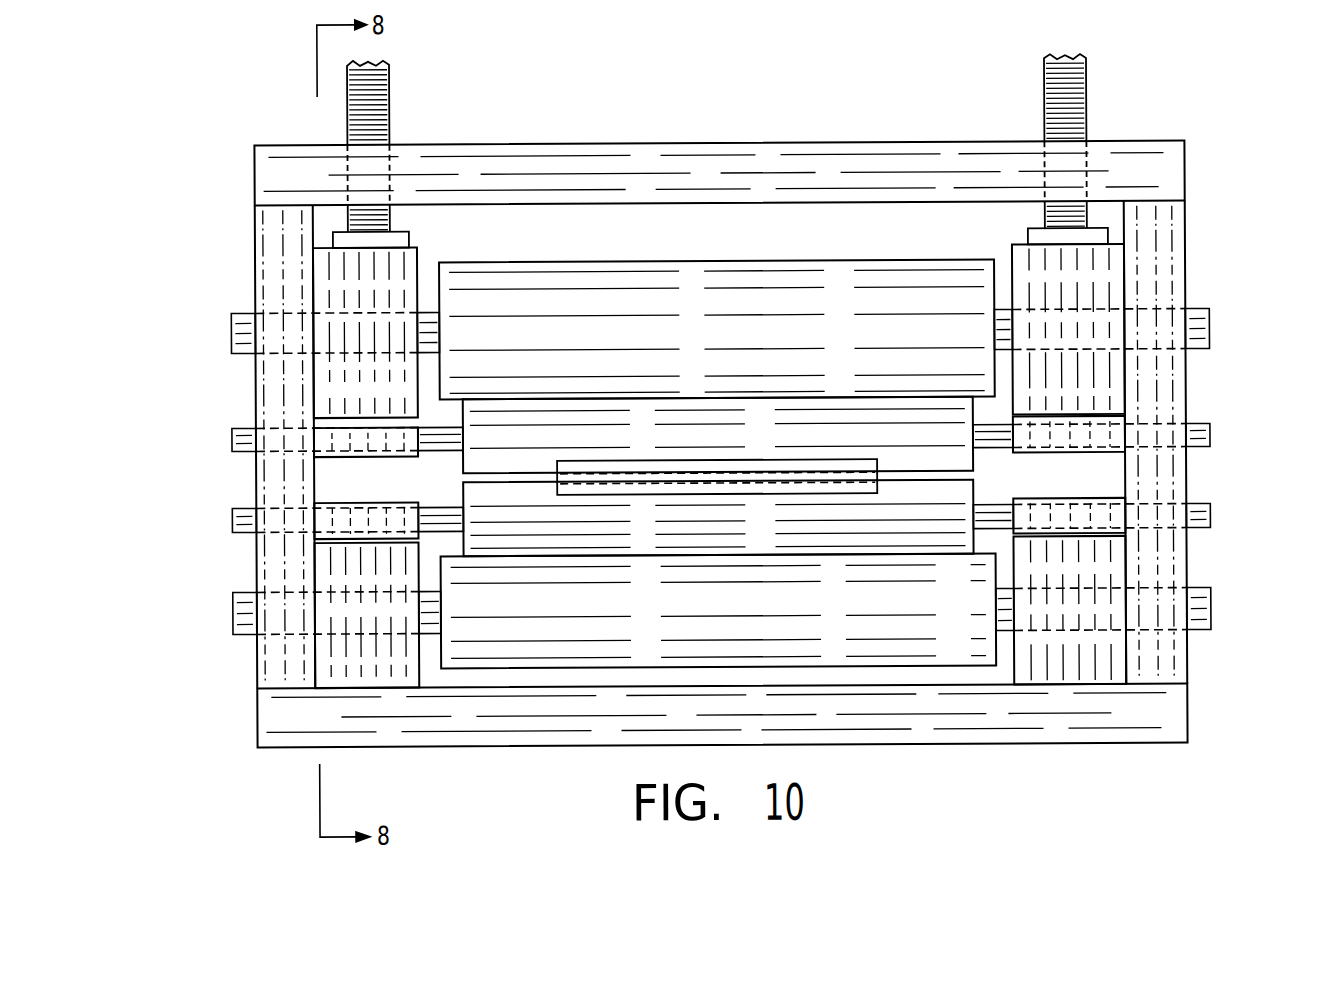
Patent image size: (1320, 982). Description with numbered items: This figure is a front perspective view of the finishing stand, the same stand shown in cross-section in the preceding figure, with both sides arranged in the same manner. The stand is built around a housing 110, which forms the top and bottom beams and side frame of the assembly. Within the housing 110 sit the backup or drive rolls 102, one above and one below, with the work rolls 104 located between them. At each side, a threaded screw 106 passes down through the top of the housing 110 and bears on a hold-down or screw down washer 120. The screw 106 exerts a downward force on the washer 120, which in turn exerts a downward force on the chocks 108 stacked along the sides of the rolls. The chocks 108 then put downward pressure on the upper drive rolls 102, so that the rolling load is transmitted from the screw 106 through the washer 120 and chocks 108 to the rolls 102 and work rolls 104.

The backup or drive roll 102 is at (682, 327).
The work roll 104 is at (875, 522).
The screw 106 is at (371, 99).
The chock 108 is at (340, 301).
The housing 110 is at (697, 143).
The hold-down or screw down washer 120 is at (340, 236).